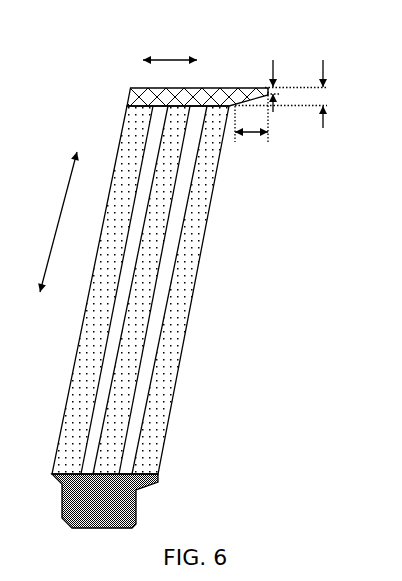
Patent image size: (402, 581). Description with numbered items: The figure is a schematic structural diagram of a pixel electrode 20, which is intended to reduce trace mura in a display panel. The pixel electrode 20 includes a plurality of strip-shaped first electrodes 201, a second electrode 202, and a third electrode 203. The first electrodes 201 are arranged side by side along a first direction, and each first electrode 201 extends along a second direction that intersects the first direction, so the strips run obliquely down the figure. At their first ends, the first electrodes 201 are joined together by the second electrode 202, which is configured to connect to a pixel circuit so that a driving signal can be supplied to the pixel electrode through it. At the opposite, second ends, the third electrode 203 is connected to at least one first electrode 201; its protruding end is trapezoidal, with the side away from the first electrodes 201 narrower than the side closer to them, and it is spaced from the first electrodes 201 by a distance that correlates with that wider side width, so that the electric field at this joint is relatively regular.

The pixel electrode 20 is at (118, 46).
The first electrodes 201 is at (194, 302).
The second electrode 202 is at (138, 509).
The third electrode 203 is at (128, 95).